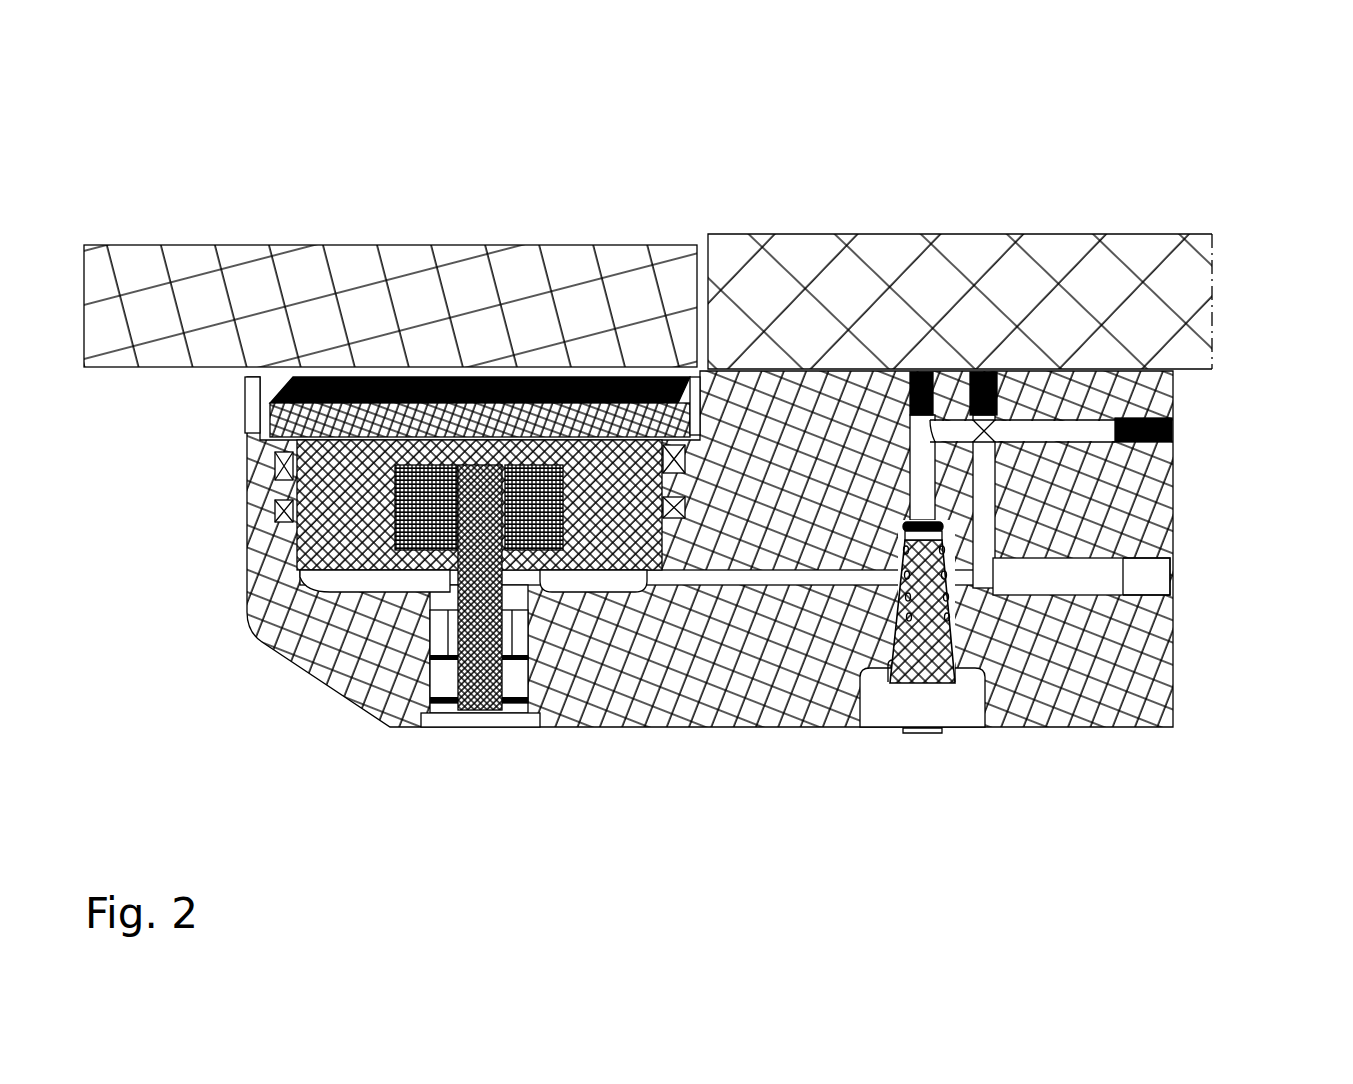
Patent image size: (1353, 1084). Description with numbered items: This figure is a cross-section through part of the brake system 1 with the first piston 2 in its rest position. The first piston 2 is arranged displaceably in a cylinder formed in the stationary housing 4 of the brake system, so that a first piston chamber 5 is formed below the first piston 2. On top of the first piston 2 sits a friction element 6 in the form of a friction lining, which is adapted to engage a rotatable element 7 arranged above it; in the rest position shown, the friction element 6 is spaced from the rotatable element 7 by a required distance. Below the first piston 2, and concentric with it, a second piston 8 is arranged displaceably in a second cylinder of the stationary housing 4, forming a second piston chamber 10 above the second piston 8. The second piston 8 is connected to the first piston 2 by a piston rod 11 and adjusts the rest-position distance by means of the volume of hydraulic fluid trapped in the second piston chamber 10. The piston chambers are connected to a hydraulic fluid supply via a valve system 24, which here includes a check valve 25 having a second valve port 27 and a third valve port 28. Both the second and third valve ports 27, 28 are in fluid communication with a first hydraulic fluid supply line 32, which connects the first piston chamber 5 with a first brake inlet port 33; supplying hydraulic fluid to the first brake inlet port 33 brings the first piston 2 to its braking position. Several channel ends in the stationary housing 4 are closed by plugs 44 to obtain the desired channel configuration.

The brake system 1 is at (1210, 150).
The first piston 2 is at (345, 527).
The stationary housing 4 is at (1130, 658).
The first piston chamber 5 is at (323, 582).
The friction element 6 is at (277, 389).
The rotatable element 7 is at (250, 267).
The second piston 8 is at (442, 673).
The second piston chamber 10 is at (438, 630).
The piston rod 11 is at (470, 580).
The valve system 24 is at (957, 780).
The check valve 25 is at (922, 664).
The second valve port 27 is at (946, 577).
The third valve port 28 is at (920, 518).
The first hydraulic fluid supply line 32 is at (1077, 570).
The first brake inlet port 33 is at (1160, 578).
The plugs 44 is at (923, 370).